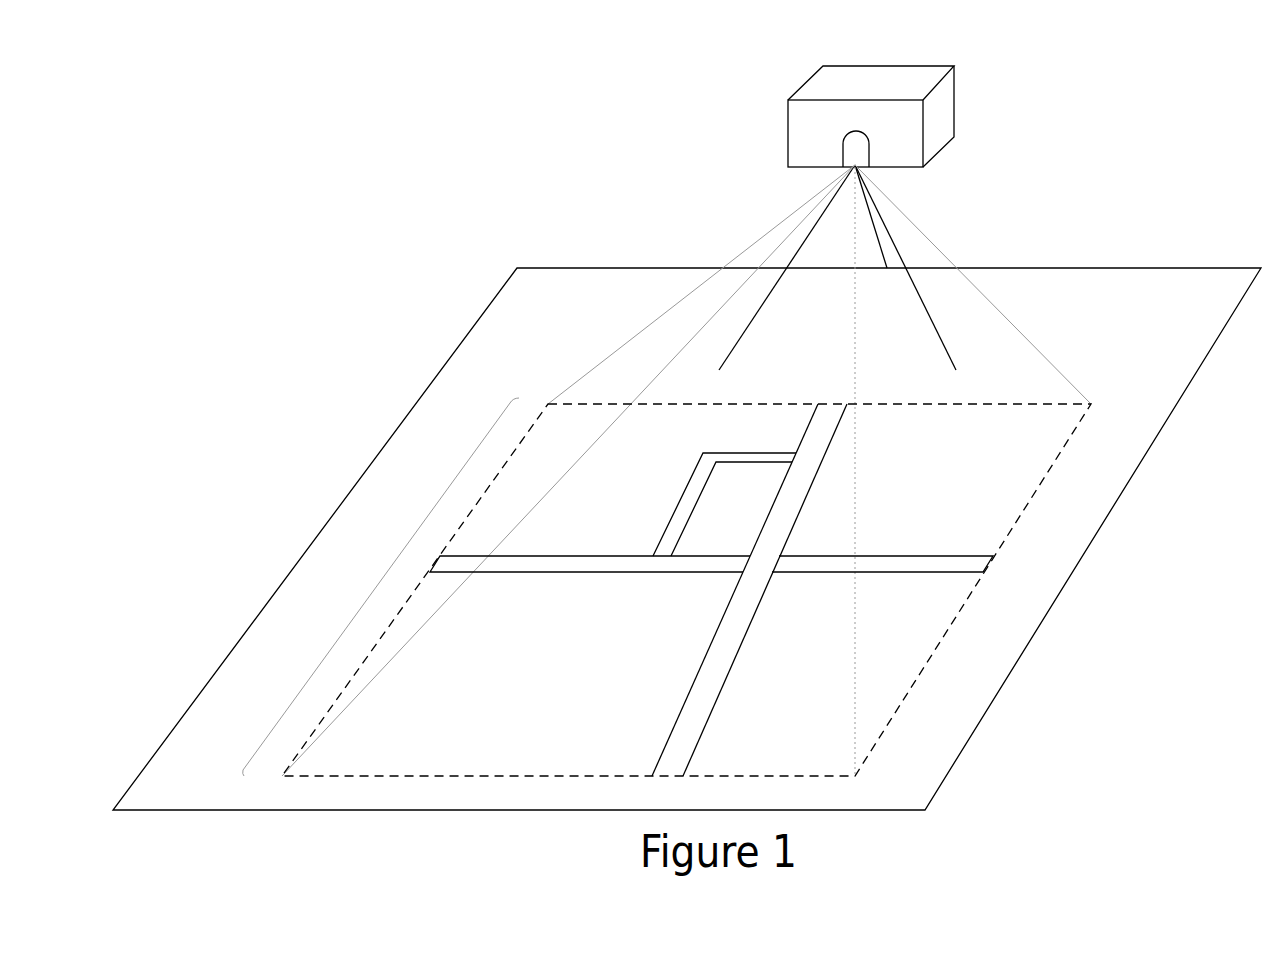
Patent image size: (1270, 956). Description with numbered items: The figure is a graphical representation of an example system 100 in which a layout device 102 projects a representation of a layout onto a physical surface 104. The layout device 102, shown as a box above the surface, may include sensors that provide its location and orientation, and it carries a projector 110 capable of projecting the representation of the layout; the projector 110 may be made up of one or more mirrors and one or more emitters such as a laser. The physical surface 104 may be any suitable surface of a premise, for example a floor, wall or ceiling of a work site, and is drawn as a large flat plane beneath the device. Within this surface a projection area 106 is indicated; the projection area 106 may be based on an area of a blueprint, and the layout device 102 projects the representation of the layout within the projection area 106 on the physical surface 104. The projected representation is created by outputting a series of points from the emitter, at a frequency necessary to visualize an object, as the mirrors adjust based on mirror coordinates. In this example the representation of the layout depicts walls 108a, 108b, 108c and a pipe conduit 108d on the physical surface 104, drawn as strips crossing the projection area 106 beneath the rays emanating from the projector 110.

The system 100 is at (138, 74).
The layout device 102 is at (954, 100).
The physical surface 104 is at (552, 268).
The projection area 106 is at (386, 580).
The wall 108a is at (810, 482).
The wall 108b is at (790, 572).
The wall 108c is at (555, 572).
The pipe conduit 108d is at (678, 504).
The projector 110 is at (852, 157).